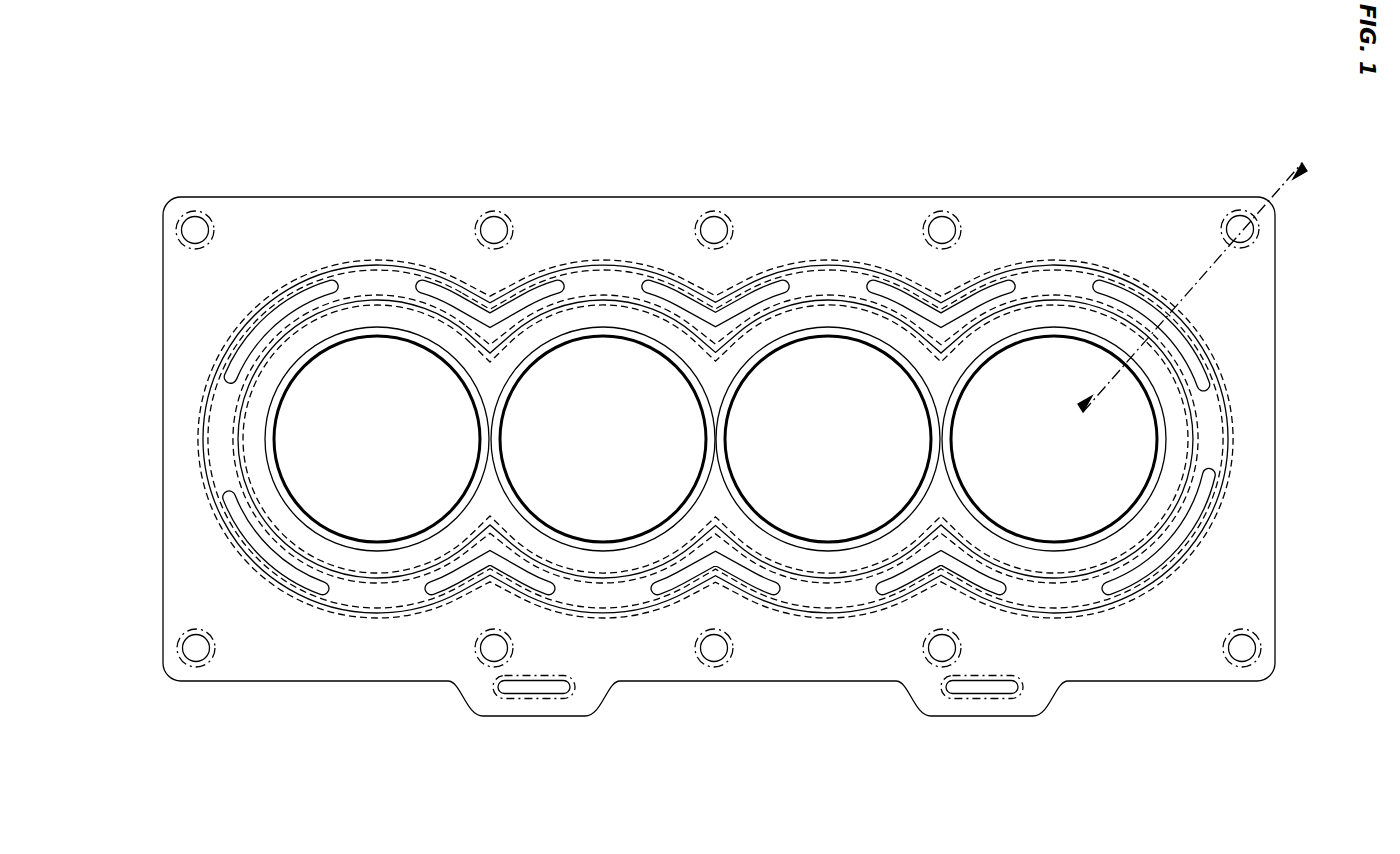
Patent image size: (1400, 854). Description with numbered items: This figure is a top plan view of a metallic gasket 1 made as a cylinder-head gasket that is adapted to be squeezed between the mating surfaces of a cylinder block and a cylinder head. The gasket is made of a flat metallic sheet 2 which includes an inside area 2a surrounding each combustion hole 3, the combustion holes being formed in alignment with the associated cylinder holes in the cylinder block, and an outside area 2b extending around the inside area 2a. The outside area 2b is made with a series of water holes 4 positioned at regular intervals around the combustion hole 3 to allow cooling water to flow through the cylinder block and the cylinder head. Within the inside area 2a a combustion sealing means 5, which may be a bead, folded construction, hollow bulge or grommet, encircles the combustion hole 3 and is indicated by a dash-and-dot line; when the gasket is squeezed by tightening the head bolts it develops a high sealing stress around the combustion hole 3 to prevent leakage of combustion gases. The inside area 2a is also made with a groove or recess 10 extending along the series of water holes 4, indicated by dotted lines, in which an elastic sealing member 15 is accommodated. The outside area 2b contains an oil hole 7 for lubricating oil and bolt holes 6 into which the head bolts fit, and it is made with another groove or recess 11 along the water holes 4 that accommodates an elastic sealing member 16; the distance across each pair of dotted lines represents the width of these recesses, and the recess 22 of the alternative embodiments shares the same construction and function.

The metallic gasket 1 is at (996, 185).
The flat metallic sheet 2 is at (653, 652).
The inside area 2a is at (250, 450).
The outside area 2b is at (572, 222).
The combustion hole 3 is at (368, 440).
The water hole 4 is at (678, 300).
The combustion sealing means 5 is at (320, 345).
The bolt hole 6 is at (490, 232).
The oil hole 7 is at (538, 688).
The groove or recess 10 is at (1062, 300).
The groove or recess 11 is at (1072, 252).
The elastic sealing member 15 is at (1017, 302).
The elastic sealing member 16 is at (1040, 255).
The recess 22 is at (1258, 231).